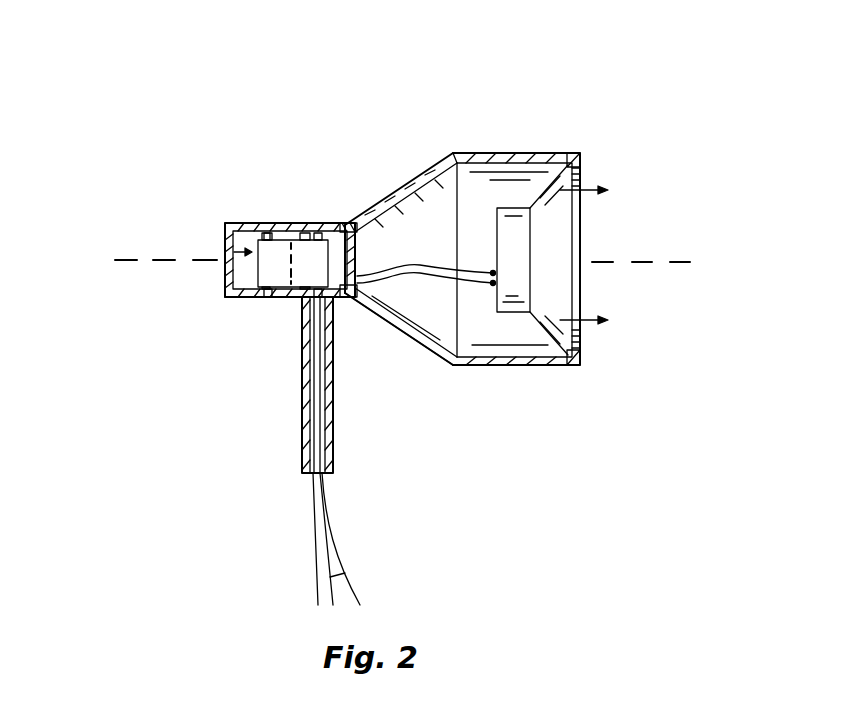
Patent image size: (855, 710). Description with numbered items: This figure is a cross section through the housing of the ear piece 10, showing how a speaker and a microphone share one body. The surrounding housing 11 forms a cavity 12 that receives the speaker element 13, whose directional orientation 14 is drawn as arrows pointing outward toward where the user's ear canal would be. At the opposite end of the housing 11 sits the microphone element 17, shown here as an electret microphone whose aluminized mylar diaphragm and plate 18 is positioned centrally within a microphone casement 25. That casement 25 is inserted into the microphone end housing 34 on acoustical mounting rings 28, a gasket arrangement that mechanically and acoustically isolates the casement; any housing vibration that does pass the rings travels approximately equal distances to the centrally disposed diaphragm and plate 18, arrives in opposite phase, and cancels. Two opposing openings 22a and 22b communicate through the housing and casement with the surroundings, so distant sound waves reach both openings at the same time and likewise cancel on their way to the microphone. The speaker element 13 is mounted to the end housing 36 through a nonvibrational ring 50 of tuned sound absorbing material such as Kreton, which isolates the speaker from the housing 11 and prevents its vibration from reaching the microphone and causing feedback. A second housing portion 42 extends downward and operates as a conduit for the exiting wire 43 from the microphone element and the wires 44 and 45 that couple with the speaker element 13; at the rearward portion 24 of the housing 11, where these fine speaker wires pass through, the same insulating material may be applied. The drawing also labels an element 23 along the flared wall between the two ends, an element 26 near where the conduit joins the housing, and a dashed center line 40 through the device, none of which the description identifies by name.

The ear piece 10 is at (563, 147).
The surrounding housing 11 is at (502, 153).
The cavity 12 is at (472, 202).
The speaker element 13 is at (552, 253).
The directional orientation 14 is at (590, 190).
The microphone element 17 is at (225, 255).
The diaphragm and plate 18 is at (290, 265).
The opening 22a is at (242, 297).
The opening 22b is at (315, 225).
The horn 23 is at (405, 178).
The rearward portion 24 is at (345, 223).
The microphone casement 25 is at (296, 225).
The tube connector 26 is at (340, 298).
The acoustical mounting rings 28 is at (258, 225).
The microphone end housing 34 is at (225, 278).
The end housing 36 is at (545, 366).
The central axis 40 is at (402, 264).
The second housing portion 42 is at (335, 398).
The wire 43 is at (312, 518).
The wire 44 is at (345, 577).
The wire 45 is at (333, 518).
The nonvibrational ring 50 is at (580, 158).